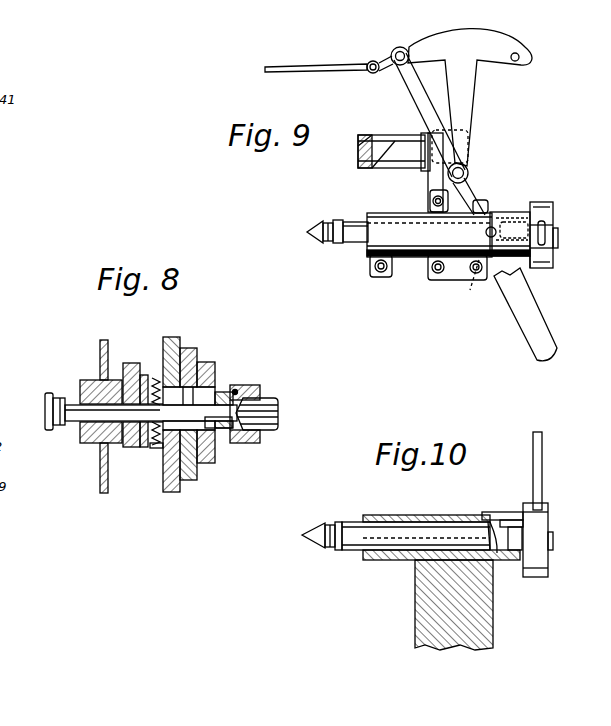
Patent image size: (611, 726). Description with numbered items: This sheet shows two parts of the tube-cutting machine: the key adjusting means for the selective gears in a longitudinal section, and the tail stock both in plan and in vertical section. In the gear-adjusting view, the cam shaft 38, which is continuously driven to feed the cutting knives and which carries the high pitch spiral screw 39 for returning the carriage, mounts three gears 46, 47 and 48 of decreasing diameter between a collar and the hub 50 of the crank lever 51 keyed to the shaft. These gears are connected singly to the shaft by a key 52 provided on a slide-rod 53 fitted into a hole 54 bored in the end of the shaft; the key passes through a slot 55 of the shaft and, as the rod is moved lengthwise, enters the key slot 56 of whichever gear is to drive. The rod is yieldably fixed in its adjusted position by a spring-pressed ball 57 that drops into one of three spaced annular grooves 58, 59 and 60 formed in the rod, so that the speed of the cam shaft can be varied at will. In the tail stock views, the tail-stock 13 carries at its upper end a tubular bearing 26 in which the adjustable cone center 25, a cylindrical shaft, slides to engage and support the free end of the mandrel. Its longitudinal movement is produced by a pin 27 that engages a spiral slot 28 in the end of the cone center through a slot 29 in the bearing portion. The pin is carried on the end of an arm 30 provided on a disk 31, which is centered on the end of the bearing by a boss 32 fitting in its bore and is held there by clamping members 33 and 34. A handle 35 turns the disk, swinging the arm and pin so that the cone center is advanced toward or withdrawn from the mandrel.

In FIG. 9, the tail-stock 13 is at (458, 272).
In FIG. 10, the tail-stock 13 is at (420, 610).
In FIG. 9, the adjustable cone center 25 is at (337, 238).
In FIG. 10, the adjustable cone center 25 is at (372, 522).
In FIG. 9, the tubular bearing 26 is at (402, 220).
In FIG. 10, the tubular bearing 26 is at (403, 560).
In FIG. 9, the pin 27 is at (490, 222).
In FIG. 10, the pin 27 is at (487, 522).
In FIG. 10, the spiral slot 28 is at (497, 553).
In FIG. 10, the slot 29 is at (503, 512).
In FIG. 9, the arm 30 is at (505, 222).
In FIG. 10, the arm 30 is at (513, 517).
In FIG. 9, the disk 31 is at (556, 218).
In FIG. 10, the disk 31 is at (540, 530).
In FIG. 10, the boss 32 is at (520, 532).
In FIG. 9, the clamping member 33 is at (543, 265).
In FIG. 9, the clamping member 34 is at (545, 201).
In FIG. 10, the clamping member 34 is at (553, 542).
In FIG. 9, the handle 35 is at (548, 233).
In FIG. 10, the handle 35 is at (541, 455).
In FIG. 9, the cam shaft 38 is at (412, 143).
In FIG. 8, the cam shaft 38 is at (279, 414).
In FIG. 9, the high pitch spiral screw 39 is at (396, 150).
In FIG. 8, the high pitch spiral screw 39 is at (100, 480).
In FIG. 8, the gear 46 is at (206, 362).
In FIG. 8, the gear 47 is at (190, 348).
In FIG. 8, the gear 48 is at (172, 337).
In FIG. 8, the hub 50 is at (142, 372).
In FIG. 8, the crank lever 51 is at (157, 372).
In FIG. 8, the key 52 is at (225, 385).
In FIG. 8, the slide-rod 53 is at (78, 420).
In FIG. 8, the hole 54 is at (223, 428).
In FIG. 8, the slot 55 is at (240, 386).
In FIG. 8, the key slot 56 is at (230, 388).
In FIG. 8, the spring-pressed ball 57 is at (158, 380).
In FIG. 8, the annular groove 58 is at (131, 440).
In FIG. 8, the annular groove 59 is at (147, 445).
In FIG. 8, the annular groove 60 is at (160, 443).